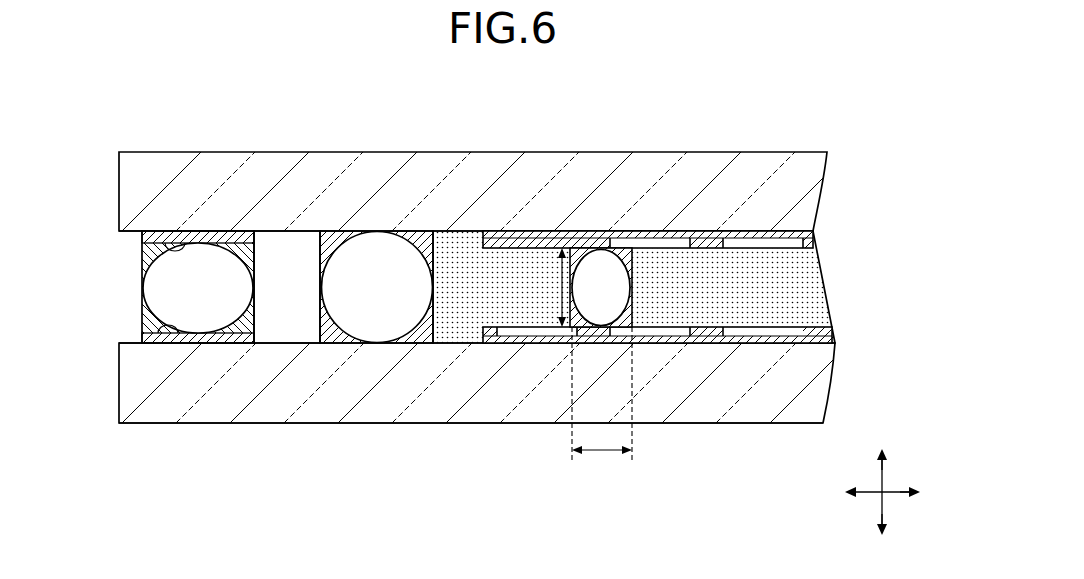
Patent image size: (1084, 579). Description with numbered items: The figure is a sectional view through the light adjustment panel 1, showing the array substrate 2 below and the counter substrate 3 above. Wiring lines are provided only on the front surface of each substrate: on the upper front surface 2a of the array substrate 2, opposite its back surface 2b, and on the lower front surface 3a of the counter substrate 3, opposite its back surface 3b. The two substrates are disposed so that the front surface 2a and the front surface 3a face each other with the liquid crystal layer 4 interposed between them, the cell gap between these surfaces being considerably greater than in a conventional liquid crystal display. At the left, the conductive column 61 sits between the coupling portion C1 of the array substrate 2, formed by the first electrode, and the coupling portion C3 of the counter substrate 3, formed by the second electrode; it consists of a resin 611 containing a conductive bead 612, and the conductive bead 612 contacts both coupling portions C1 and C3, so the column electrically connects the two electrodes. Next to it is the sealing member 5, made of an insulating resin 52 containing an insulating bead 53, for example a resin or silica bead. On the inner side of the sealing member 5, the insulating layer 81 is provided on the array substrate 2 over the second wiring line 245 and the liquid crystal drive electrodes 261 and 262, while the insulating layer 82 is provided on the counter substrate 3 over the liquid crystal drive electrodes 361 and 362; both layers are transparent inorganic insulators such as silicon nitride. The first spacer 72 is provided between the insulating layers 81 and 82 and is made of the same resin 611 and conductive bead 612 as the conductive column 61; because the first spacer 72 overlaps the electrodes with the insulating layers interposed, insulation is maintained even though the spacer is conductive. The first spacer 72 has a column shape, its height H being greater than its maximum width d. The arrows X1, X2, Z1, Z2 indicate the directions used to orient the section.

The light adjustment panel 1 is at (884, 112).
The array substrate 2 is at (112, 383).
The front surface of array substrate 2a is at (131, 343).
The back surface of array substrate 2b is at (212, 425).
The counter substrate 3 is at (112, 193).
The front surface of counter substrate 3a is at (131, 232).
The back surface of counter substrate 3b is at (355, 152).
The liquid crystal layer 4 is at (828, 297).
The sealing member 5 is at (378, 105).
The insulating resin 52 is at (428, 240).
The insulating bead 53 is at (380, 266).
The conductive column 61 is at (210, 105).
The resin 611 is at (262, 240).
The conductive bead 612 is at (214, 266).
The first spacer 72 is at (513, 105).
The insulating layer 81 is at (824, 327).
The insulating layer 82 is at (710, 250).
The second wiring line 245 is at (524, 327).
The liquid crystal drive electrode 261 is at (671, 327).
The liquid crystal drive electrode 262 is at (729, 327).
The liquid crystal drive electrode 361 is at (640, 240).
The liquid crystal drive electrode 362 is at (772, 248).
The height of first spacer H is at (560, 293).
The maximum width of first spacer d is at (600, 453).
The coupling portion of array substrate C1 is at (147, 332).
The coupling portion of counter substrate C3 is at (178, 240).
The X1 direction X1 is at (864, 492).
The X2 direction X2 is at (927, 493).
The Z1 direction Z1 is at (882, 448).
The Z2 direction Z2 is at (882, 537).